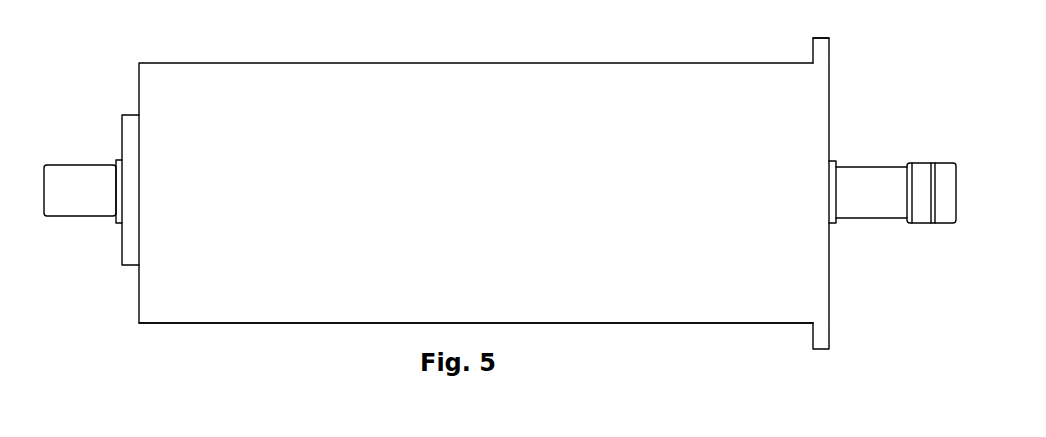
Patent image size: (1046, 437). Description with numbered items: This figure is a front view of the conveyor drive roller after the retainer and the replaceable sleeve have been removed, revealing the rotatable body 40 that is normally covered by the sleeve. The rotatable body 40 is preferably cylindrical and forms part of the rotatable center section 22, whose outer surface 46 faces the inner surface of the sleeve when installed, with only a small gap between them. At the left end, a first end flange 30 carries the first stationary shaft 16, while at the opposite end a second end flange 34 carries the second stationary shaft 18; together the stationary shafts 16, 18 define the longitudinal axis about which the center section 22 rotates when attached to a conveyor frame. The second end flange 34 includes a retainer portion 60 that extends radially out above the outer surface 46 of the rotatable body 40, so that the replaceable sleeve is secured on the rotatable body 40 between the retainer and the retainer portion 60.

The first stationary shaft 16 is at (85, 216).
The second stationary shaft 18 is at (888, 218).
The rotatable center section 22 is at (317, 355).
The first end flange 30 is at (140, 90).
The second end flange 34 is at (830, 92).
The rotatable body 40 is at (342, 63).
The outer surface 46 is at (446, 188).
The retainer portion 60 is at (822, 43).